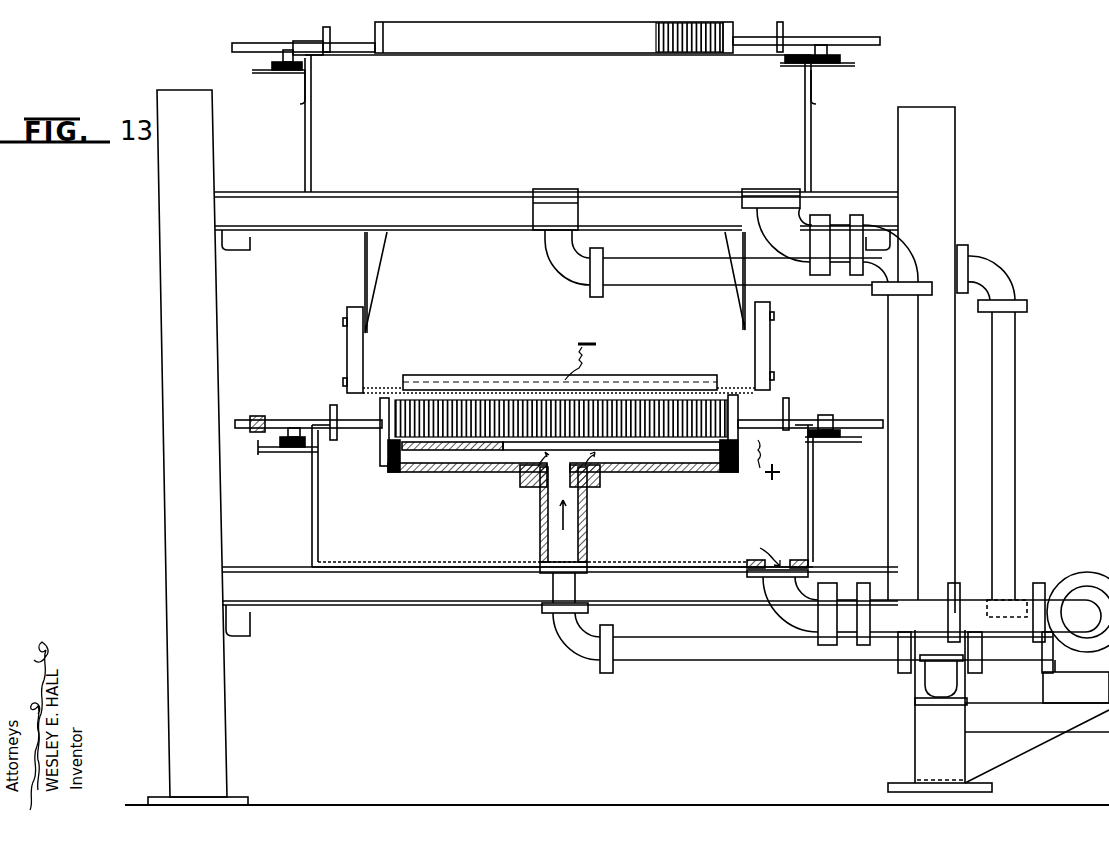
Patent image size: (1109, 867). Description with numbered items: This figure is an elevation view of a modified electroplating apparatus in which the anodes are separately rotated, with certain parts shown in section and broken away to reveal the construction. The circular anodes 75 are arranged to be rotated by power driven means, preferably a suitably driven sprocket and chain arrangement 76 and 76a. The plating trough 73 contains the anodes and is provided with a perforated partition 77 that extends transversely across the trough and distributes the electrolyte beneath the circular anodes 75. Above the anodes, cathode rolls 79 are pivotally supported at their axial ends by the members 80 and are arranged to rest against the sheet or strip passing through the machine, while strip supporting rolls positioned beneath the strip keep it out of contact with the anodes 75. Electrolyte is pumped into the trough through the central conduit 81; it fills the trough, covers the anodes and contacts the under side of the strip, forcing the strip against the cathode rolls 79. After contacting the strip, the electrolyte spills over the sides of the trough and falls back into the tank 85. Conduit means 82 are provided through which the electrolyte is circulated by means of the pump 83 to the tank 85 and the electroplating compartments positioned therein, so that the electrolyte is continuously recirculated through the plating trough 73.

The plating trough 73 is at (727, 468).
The anodes 75 is at (700, 52).
The sprocket 76 is at (256, 46).
The chain 76a is at (250, 460).
The perforated partition 77 is at (649, 446).
The cathode rolls 79 is at (632, 378).
The members 80 is at (356, 352).
The central conduit 81 is at (563, 258).
The conduit means 82 is at (791, 254).
The pump 83 is at (1082, 584).
The tank 85 is at (313, 135).